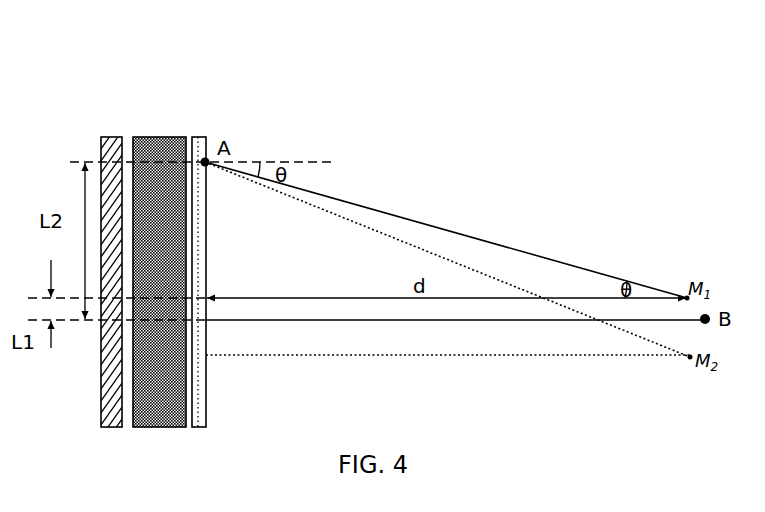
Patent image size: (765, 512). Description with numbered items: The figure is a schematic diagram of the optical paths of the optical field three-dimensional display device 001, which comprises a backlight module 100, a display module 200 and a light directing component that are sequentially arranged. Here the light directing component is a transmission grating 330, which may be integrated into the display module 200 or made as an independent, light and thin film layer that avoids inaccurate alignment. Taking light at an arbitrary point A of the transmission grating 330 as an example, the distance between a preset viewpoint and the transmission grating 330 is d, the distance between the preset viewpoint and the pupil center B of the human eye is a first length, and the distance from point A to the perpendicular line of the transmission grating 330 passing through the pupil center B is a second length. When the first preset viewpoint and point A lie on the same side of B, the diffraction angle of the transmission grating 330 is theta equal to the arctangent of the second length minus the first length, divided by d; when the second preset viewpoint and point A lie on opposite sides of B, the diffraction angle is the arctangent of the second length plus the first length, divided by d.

The display device 001 is at (230, 65).
The backlight module 100 is at (117, 137).
The display module 200 is at (165, 137).
The transmission grating 330 is at (205, 137).